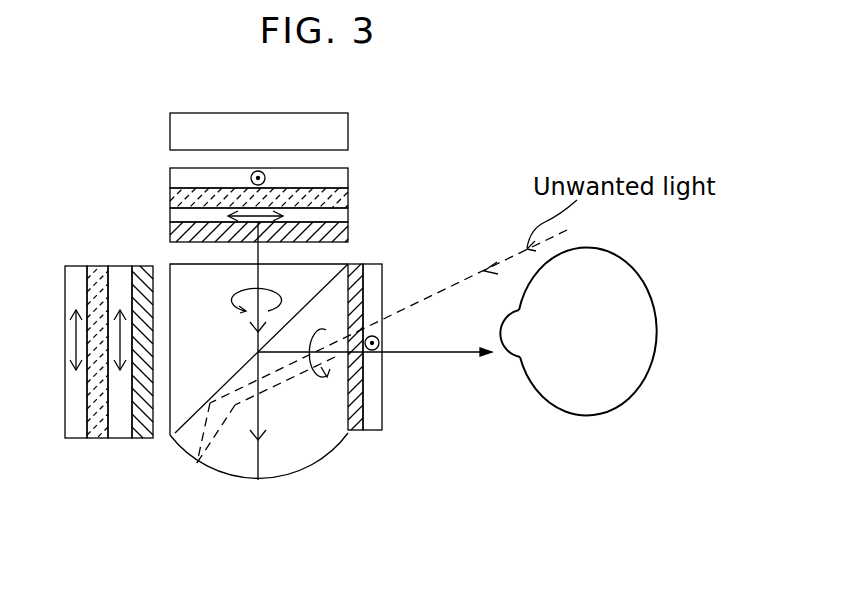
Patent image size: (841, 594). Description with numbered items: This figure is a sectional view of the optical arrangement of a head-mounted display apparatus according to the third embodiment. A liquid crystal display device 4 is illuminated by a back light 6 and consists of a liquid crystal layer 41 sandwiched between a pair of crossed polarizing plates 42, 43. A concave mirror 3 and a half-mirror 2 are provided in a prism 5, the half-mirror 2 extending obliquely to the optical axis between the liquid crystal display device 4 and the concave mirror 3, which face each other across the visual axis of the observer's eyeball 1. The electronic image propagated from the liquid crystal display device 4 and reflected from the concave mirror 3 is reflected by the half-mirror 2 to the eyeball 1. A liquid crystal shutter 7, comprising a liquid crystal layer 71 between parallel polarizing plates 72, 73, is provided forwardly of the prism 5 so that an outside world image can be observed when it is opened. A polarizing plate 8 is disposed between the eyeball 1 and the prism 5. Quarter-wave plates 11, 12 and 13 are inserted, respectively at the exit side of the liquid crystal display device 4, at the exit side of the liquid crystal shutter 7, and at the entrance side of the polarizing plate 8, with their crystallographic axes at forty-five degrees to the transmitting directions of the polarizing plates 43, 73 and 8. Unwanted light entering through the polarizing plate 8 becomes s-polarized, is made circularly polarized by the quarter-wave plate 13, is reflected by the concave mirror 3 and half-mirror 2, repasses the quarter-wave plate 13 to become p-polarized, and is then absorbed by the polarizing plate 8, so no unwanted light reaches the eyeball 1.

The eyeball 1 is at (605, 422).
The half-mirror 2 is at (188, 457).
The concave mirror 3 is at (331, 383).
The liquid crystal display device 4 is at (305, 195).
The prism 5 is at (313, 457).
The back light 6 is at (348, 130).
The liquid crystal shutter 7 is at (98, 409).
The polarizing plate 8 is at (378, 433).
The quarter-wave plate 11 is at (348, 234).
The quarter-wave plate 12 is at (147, 438).
The quarter-wave plate 13 is at (358, 433).
The liquid crystal layer 41 is at (348, 198).
The polarizing plate 42 is at (348, 178).
The exit-side polarizing plate 43 is at (286, 222).
The liquid crystal layer 71 is at (100, 438).
The polarizing plate 72 is at (80, 438).
The exit-side polarizing plate 73 is at (131, 382).